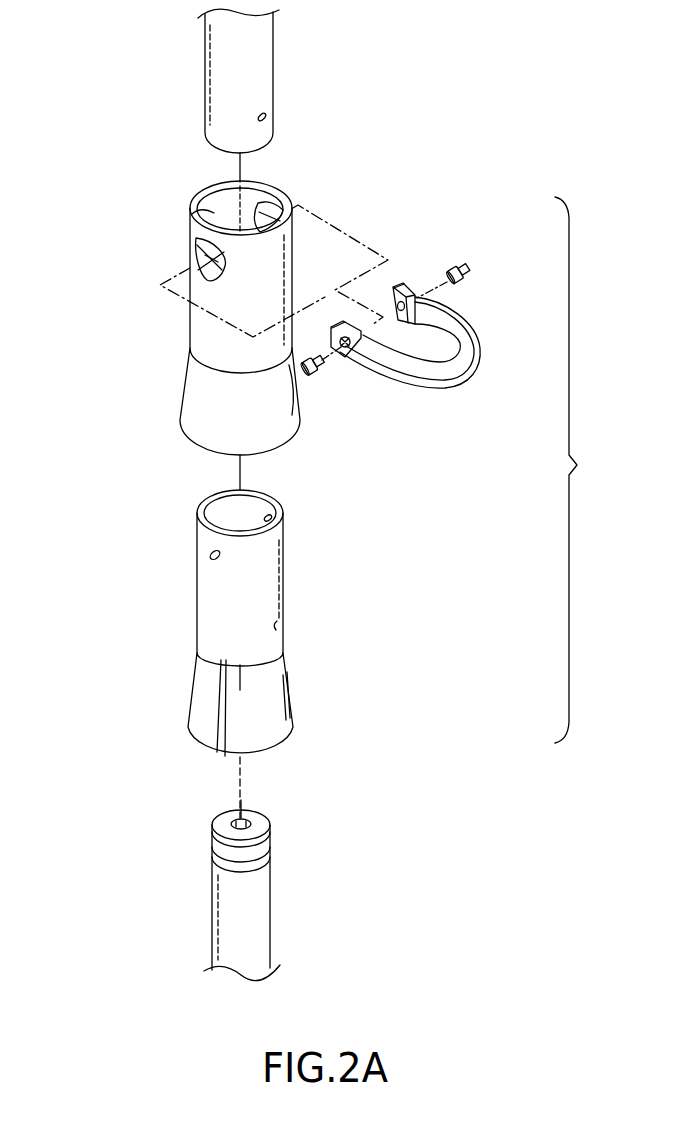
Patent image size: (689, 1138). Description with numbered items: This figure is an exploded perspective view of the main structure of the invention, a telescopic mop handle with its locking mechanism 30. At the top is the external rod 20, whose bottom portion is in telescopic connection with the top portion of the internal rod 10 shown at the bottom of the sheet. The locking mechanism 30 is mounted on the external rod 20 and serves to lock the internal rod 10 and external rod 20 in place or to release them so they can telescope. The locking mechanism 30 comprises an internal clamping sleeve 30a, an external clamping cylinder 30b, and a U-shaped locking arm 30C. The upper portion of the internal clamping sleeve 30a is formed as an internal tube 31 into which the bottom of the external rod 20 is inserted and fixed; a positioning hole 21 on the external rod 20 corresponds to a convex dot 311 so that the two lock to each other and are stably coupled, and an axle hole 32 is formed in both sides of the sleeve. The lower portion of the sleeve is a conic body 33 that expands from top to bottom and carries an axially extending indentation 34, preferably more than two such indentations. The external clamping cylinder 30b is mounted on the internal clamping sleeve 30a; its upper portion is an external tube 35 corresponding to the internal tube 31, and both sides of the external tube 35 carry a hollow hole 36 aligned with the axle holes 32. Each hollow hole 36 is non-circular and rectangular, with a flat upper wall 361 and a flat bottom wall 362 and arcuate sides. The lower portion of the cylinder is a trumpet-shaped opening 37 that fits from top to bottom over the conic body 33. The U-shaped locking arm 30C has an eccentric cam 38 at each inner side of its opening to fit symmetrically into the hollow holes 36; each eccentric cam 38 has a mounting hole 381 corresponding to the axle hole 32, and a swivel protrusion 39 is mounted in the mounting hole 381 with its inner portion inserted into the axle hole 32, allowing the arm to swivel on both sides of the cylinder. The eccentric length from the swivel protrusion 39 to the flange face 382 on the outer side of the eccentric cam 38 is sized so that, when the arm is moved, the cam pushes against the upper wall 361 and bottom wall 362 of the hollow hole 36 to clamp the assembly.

The internal rod 10 is at (255, 913).
The external rod 20 is at (218, 74).
The positioning hole 21 is at (270, 115).
The locking mechanism 30 is at (328, 481).
The internal clamping sleeve 30a is at (350, 573).
The external clamping cylinder 30b is at (136, 254).
The U-shaped locking arm 30C is at (496, 343).
The internal tube 31 is at (285, 575).
The convex dot 311 is at (280, 625).
The axle hole 32 is at (208, 556).
The conic body 33 is at (282, 702).
The indentation 34 is at (223, 737).
The external tube 35 is at (198, 331).
The hollow hole 36 is at (268, 203).
The upper wall 361 is at (198, 197).
The bottom wall 362 is at (210, 252).
The trumpet-shaped opening 37 is at (193, 405).
The eccentric cam 38 is at (402, 284).
The mounting hole 381 is at (350, 352).
The flange face 382 is at (386, 286).
The swivel protrusion 39 is at (465, 262).